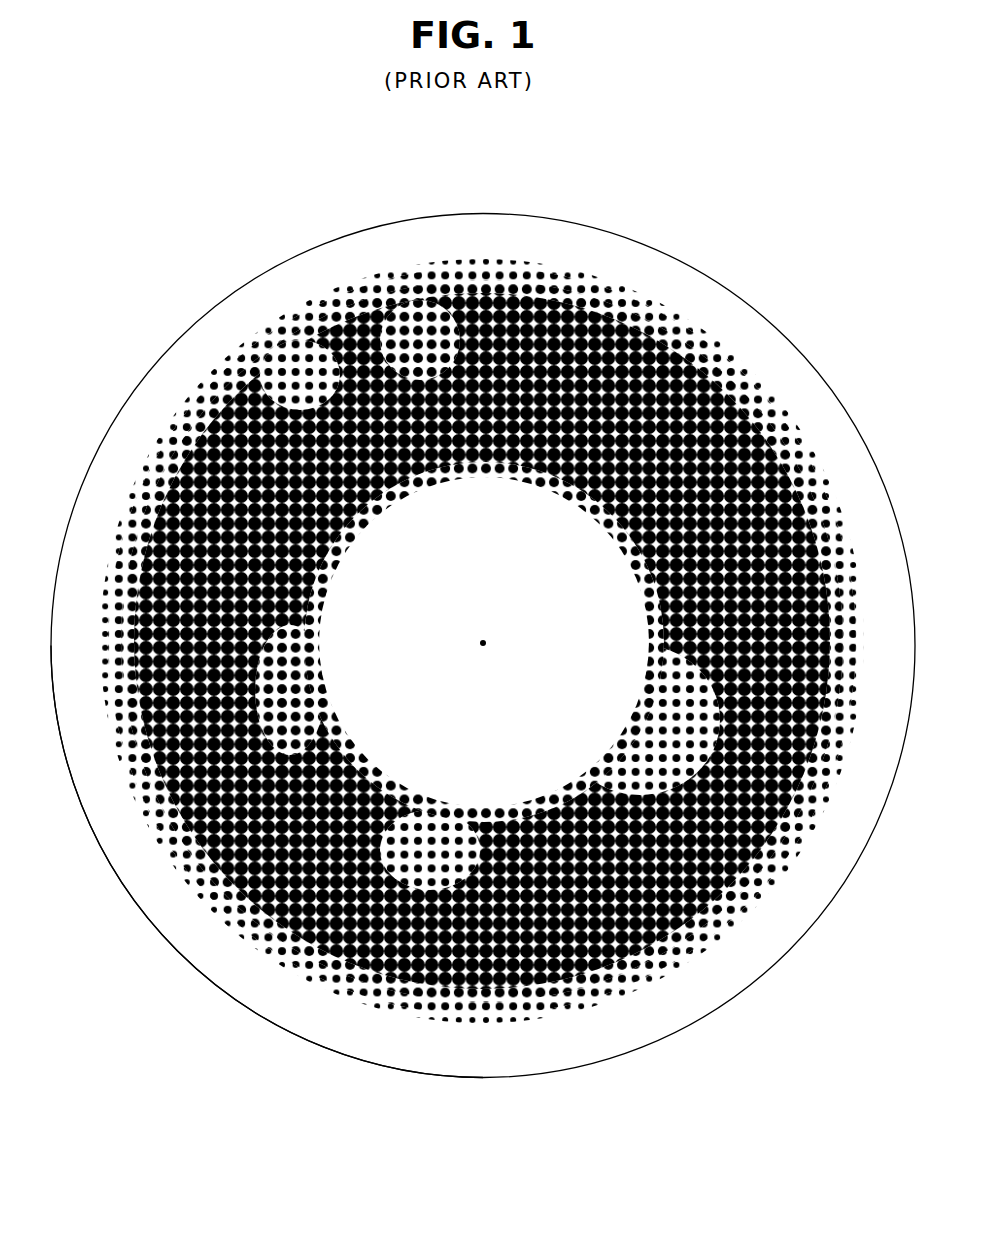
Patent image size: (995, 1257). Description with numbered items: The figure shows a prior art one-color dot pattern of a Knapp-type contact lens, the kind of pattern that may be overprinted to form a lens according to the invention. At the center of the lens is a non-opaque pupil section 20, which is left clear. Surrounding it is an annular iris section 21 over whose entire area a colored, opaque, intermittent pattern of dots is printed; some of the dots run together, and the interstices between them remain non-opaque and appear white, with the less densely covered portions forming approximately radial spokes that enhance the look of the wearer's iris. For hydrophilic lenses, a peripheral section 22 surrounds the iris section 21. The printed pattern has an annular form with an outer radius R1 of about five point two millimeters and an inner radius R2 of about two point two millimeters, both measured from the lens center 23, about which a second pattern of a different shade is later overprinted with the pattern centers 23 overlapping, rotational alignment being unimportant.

The pupil section 20 is at (500, 574).
The iris section 21 is at (318, 963).
The peripheral section 22 is at (153, 858).
The lens center 23 is at (480, 644).
The outer radius R1 is at (486, 640).
The inner radius R2 is at (565, 788).